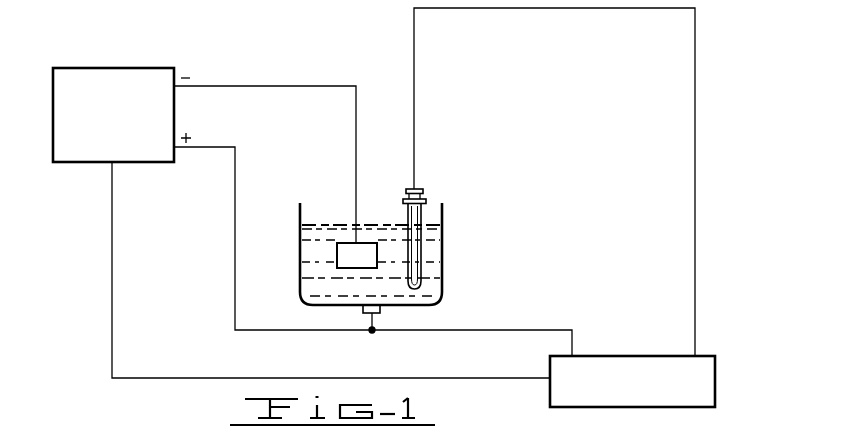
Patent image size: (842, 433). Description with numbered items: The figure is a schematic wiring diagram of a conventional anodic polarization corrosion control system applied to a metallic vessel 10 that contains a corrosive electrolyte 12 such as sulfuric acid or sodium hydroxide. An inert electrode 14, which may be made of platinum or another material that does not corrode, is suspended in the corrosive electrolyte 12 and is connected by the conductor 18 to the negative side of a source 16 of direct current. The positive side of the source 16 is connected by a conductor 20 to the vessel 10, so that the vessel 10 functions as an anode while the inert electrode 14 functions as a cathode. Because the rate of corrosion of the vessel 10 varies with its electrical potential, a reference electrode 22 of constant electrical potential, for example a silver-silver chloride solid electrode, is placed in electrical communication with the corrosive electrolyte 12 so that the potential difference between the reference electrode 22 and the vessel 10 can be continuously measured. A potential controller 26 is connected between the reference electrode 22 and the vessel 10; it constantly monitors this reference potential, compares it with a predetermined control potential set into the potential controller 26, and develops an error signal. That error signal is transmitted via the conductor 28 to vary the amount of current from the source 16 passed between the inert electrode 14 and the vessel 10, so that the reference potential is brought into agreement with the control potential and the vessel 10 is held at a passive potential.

The metallic vessel 10 is at (443, 266).
The corrosive electrolyte 12 is at (307, 268).
The inert electrode 14 is at (349, 264).
The source of direct current 16 is at (105, 151).
The conductor 18 is at (318, 61).
The conductor 20 is at (234, 243).
The reference electrode 22 is at (418, 252).
The potential controller 26 is at (707, 366).
The conductor 28 is at (160, 378).